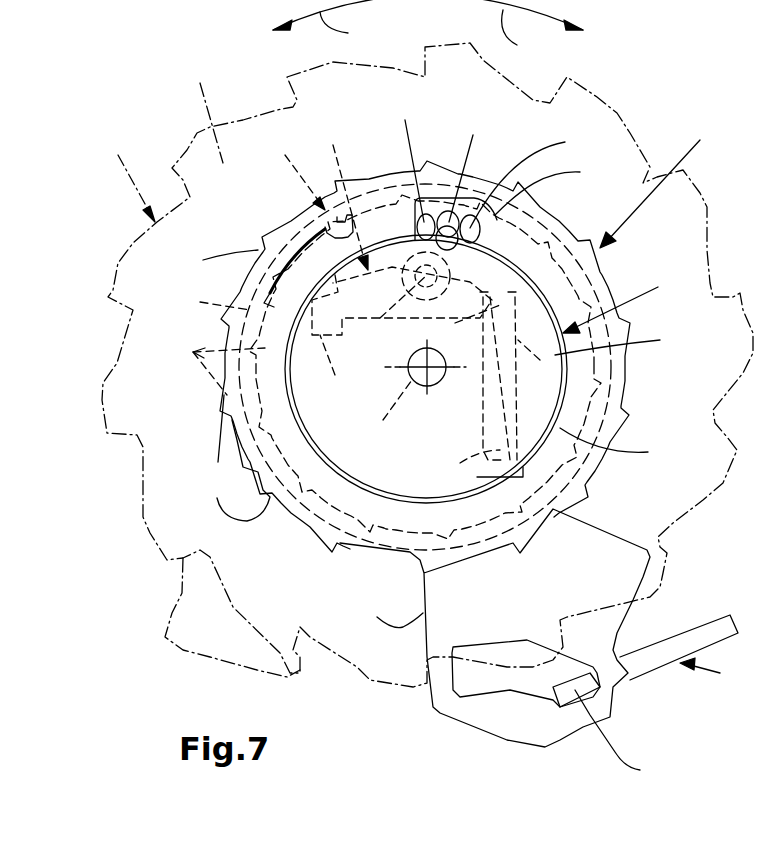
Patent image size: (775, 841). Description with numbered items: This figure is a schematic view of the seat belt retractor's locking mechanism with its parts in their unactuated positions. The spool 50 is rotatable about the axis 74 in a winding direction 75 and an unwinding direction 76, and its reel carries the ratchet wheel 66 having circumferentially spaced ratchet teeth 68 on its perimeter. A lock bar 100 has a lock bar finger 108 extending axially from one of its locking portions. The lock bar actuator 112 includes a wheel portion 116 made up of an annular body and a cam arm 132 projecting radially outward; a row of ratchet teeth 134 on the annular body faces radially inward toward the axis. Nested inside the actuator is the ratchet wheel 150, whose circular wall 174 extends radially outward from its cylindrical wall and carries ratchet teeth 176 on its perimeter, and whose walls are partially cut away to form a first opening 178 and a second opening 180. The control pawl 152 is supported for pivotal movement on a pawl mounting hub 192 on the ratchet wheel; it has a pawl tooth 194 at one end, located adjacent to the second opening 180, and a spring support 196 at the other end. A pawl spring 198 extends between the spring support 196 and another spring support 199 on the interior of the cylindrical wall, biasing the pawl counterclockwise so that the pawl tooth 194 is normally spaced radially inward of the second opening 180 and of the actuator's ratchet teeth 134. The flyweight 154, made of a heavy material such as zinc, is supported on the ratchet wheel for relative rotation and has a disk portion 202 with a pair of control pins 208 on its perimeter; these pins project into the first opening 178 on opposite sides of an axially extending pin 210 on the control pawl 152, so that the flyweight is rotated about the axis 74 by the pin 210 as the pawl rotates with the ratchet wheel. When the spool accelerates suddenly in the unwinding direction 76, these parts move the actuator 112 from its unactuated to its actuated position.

The spool 50 is at (131, 175).
The ratchet wheel 66 is at (205, 110).
The ratchet teeth 68 is at (427, 365).
The axis 74 is at (412, 392).
The winding direction 75 is at (542, 34).
The unwinding direction 76 is at (428, 23).
The lock bar 100 is at (691, 651).
The lock bar finger 108 is at (565, 714).
The lock bar actuator 112 is at (283, 169).
The wheel portion 116 is at (254, 264).
The cam arm 132 is at (495, 628).
The ratchet teeth 134 is at (205, 367).
The ratchet wheel 150 is at (472, 333).
The control pawl 152 is at (340, 193).
The flyweight 154 is at (487, 369).
The circular wall 174 is at (619, 455).
The ratchet teeth 176 is at (230, 458).
The first opening 178 is at (557, 188).
The second opening 180 is at (242, 268).
The pawl mounting hub 192 is at (401, 296).
The pawl tooth 194 is at (402, 332).
The spring support 196 is at (454, 320).
The pawl spring 198 is at (520, 376).
The spring support 199 is at (467, 463).
The disk portion 202 is at (478, 367).
The control pins 208 is at (488, 170).
The pin 210 is at (465, 180).